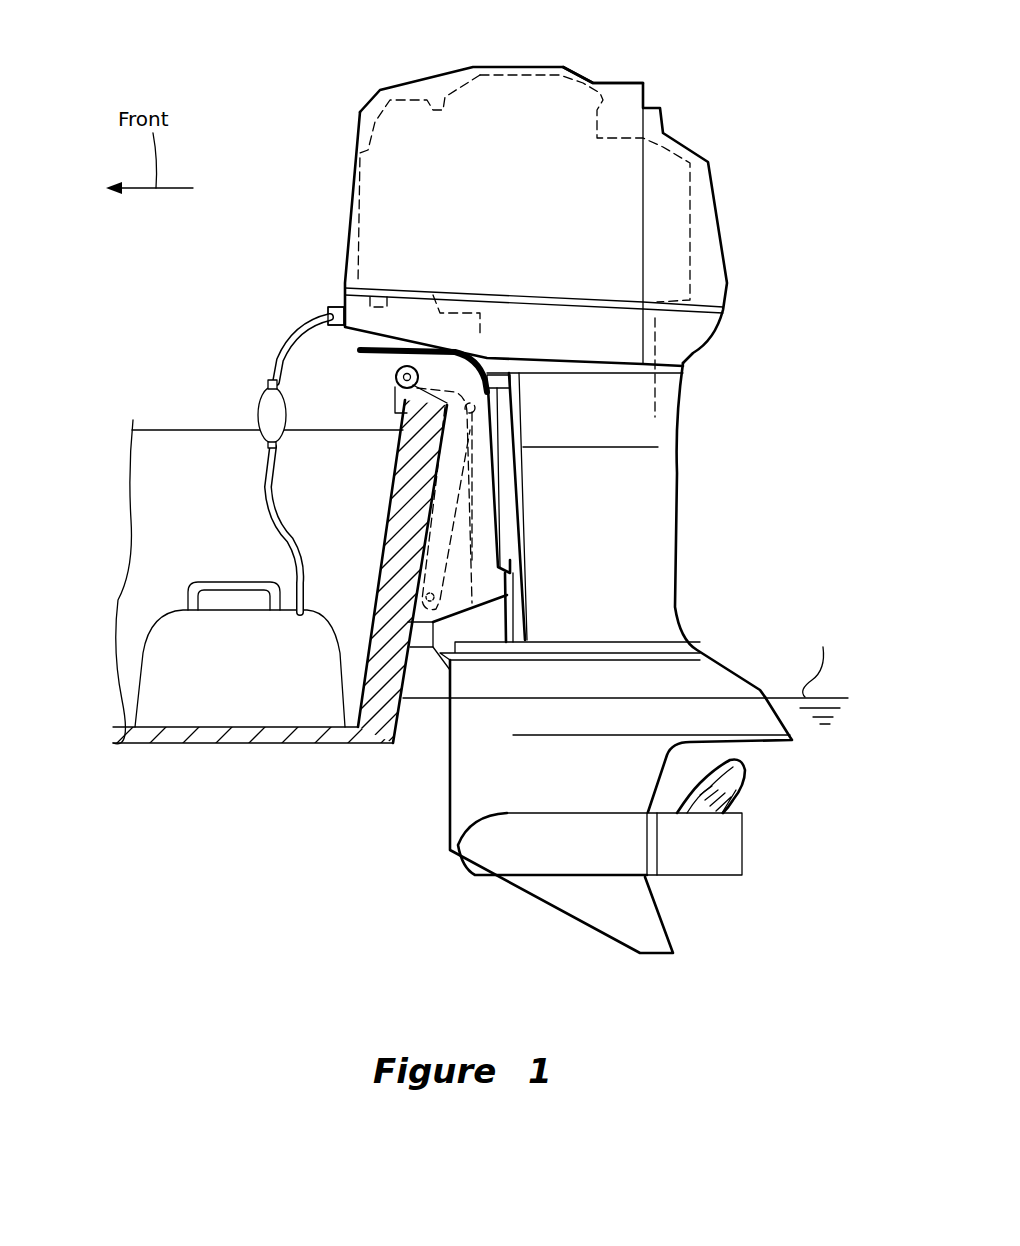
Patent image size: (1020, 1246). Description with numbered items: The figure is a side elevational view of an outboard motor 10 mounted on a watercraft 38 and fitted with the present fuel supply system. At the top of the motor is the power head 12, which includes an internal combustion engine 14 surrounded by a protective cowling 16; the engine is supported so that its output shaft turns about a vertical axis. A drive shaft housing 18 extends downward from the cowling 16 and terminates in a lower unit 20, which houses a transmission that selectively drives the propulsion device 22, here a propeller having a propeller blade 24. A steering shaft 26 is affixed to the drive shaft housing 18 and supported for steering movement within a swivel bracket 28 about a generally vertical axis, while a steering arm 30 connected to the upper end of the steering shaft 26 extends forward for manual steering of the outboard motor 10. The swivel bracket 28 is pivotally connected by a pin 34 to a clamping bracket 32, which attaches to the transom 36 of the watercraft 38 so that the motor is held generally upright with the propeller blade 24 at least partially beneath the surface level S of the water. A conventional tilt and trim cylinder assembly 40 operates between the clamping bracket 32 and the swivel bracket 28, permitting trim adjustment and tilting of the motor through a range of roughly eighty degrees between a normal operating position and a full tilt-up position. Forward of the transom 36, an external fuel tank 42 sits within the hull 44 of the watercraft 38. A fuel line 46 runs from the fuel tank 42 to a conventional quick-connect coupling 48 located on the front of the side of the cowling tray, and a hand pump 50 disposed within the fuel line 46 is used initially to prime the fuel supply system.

The outboard motor 10 is at (690, 386).
The power head 12 is at (343, 124).
The internal combustion engine 14 is at (700, 193).
The protective cowling 16 is at (599, 70).
The drive shaft housing 18 is at (660, 503).
The lower unit 20 is at (470, 772).
The propulsion device 22 is at (695, 868).
The propeller blade 24 is at (740, 790).
The steering shaft 26 is at (498, 418).
The swivel bracket 28 is at (498, 480).
The steering arm 30 is at (327, 317).
The clamping bracket 32 is at (400, 458).
The pin 34 is at (396, 378).
The transom 36 is at (375, 717).
The watercraft 38 is at (162, 388).
The tilt and trim cylinder assembly 40 is at (420, 557).
The external fuel tank 42 is at (150, 638).
The hull 44 is at (155, 472).
The fuel line 46 is at (287, 343).
The quick-connect coupling 48 is at (338, 307).
The hand pump 50 is at (263, 405).